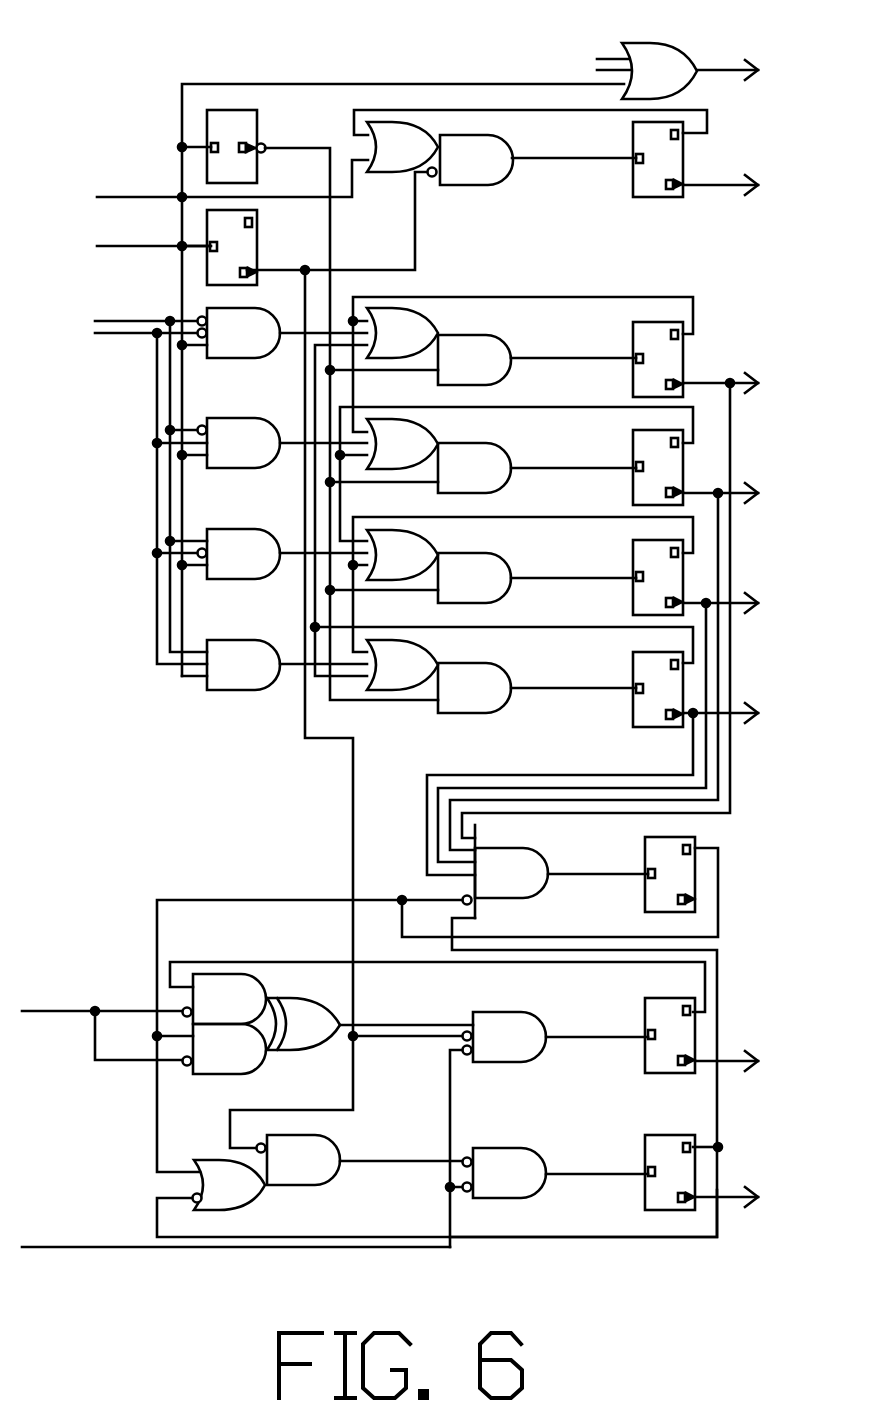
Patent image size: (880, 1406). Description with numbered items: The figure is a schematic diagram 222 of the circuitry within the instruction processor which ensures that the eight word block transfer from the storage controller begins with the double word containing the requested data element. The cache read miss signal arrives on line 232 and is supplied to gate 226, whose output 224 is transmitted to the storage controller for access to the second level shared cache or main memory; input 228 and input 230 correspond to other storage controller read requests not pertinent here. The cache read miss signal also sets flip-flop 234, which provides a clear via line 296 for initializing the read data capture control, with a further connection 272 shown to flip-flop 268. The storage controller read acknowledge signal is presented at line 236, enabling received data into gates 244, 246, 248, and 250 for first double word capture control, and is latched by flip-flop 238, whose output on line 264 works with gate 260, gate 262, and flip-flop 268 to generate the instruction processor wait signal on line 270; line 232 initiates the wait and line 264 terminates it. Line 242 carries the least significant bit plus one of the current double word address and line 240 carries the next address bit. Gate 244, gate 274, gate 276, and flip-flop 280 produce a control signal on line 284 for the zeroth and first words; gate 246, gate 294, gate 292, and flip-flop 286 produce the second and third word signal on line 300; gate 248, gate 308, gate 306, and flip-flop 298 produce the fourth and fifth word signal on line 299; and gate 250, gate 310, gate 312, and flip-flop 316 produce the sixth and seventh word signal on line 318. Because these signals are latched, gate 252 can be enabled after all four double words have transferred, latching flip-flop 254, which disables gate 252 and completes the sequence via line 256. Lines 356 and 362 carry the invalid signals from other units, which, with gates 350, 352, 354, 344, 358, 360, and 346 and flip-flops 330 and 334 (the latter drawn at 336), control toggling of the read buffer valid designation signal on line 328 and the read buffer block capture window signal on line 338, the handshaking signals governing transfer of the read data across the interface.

The schematic diagram 222 is at (114, 107).
The output line 224 is at (703, 62).
The gate 226 is at (652, 48).
The input 228 is at (612, 57).
The input 230 is at (597, 70).
The line 232 is at (107, 197).
The flip-flop 234 is at (223, 117).
The line 236 is at (112, 246).
The flip-flop 238 is at (247, 252).
The line 240 is at (112, 318).
The line 242 is at (97, 338).
The gate 244 is at (237, 320).
The gate 246 is at (222, 430).
The gate 248 is at (215, 540).
The gate 250 is at (215, 650).
The gate 252 is at (537, 865).
The flip-flop 254 is at (692, 842).
The line 256 is at (540, 937).
The gate 260 is at (400, 162).
The gate 262 is at (493, 170).
The line 264 is at (415, 245).
The flip-flop 268 is at (648, 195).
The line 270 is at (703, 182).
The line 272 is at (707, 115).
The gate 274 is at (407, 326).
The gate 276 is at (497, 336).
The flip-flop 280 is at (643, 337).
The line 284 is at (695, 380).
The flip-flop 286 is at (643, 450).
The gate 292 is at (497, 455).
The gate 294 is at (407, 435).
The line 296 is at (278, 143).
The flip-flop 298 is at (645, 555).
The line 299 is at (697, 600).
The line 300 is at (697, 488).
The gate 306 is at (495, 566).
The gate 308 is at (415, 548).
The gate 310 is at (412, 658).
The gate 312 is at (495, 676).
The flip-flop 316 is at (645, 665).
The line 318 is at (697, 710).
The line 328 is at (707, 1064).
The flip-flop 330 is at (652, 1010).
The flip-flop 334 is at (650, 1200).
The flip-flop 336 is at (717, 1135).
The line 338 is at (718, 1236).
The gate 344 is at (508, 1012).
The gate 346 is at (508, 1148).
The gate 350 is at (287, 1040).
The gate 352 is at (248, 990).
The gate 354 is at (230, 1065).
The line 356 is at (50, 1011).
The gate 358 is at (223, 1200).
The gate 360 is at (310, 1175).
The line 362 is at (45, 1247).